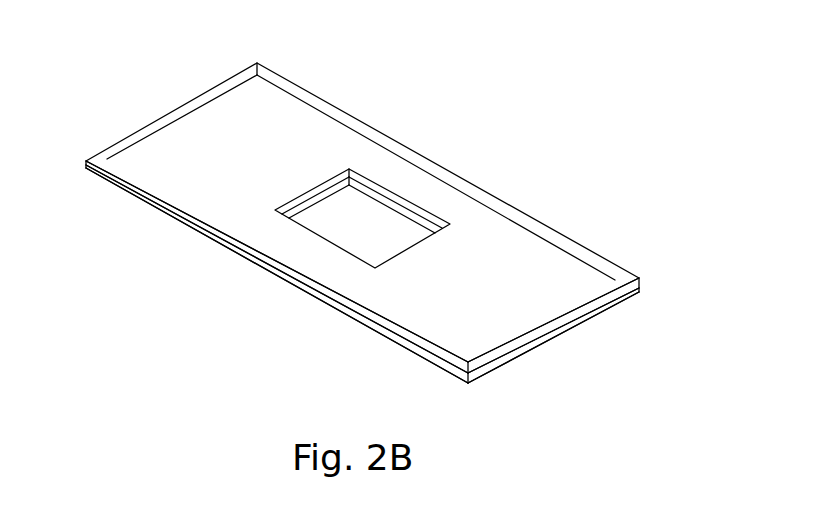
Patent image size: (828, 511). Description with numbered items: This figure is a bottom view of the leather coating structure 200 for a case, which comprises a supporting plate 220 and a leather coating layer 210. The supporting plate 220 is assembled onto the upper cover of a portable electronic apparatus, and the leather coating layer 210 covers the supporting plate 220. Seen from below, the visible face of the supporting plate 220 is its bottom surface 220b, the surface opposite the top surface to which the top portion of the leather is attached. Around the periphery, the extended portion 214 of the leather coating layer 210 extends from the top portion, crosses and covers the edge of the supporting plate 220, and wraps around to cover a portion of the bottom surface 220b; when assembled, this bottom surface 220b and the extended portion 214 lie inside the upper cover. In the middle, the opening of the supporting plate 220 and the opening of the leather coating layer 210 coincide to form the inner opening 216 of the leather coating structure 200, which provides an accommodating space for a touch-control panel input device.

The leather coating structure 200 is at (95, 35).
The leather coating layer 210 is at (402, 210).
The supporting plate 220 is at (362, 177).
The bottom surface 220b is at (165, 182).
The extended portion 214 is at (518, 218).
The inner opening 216 is at (336, 226).